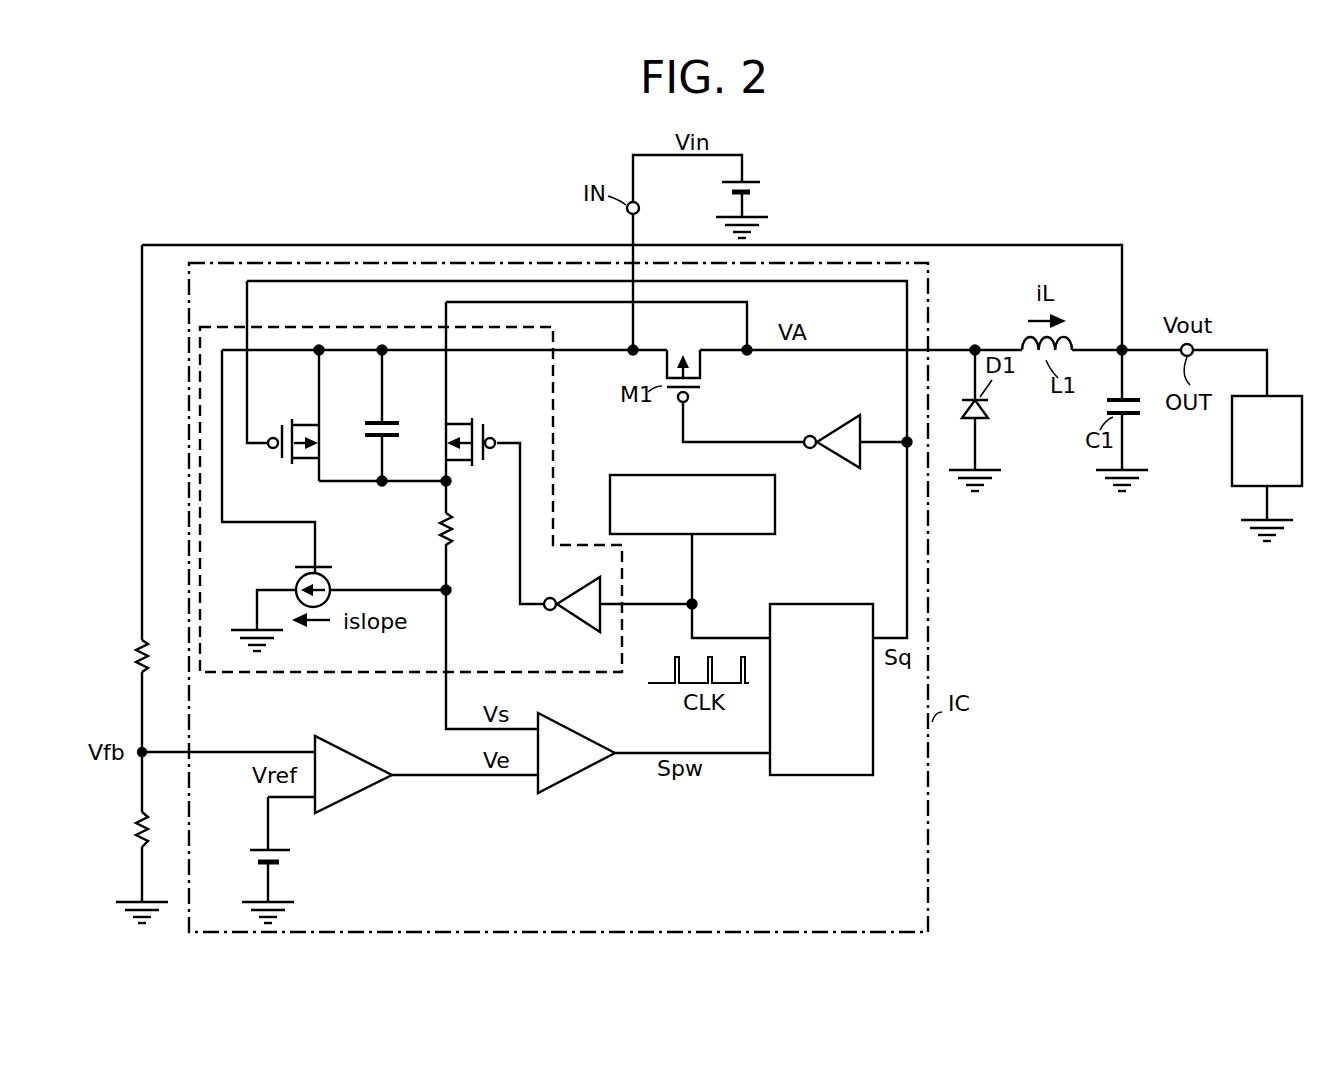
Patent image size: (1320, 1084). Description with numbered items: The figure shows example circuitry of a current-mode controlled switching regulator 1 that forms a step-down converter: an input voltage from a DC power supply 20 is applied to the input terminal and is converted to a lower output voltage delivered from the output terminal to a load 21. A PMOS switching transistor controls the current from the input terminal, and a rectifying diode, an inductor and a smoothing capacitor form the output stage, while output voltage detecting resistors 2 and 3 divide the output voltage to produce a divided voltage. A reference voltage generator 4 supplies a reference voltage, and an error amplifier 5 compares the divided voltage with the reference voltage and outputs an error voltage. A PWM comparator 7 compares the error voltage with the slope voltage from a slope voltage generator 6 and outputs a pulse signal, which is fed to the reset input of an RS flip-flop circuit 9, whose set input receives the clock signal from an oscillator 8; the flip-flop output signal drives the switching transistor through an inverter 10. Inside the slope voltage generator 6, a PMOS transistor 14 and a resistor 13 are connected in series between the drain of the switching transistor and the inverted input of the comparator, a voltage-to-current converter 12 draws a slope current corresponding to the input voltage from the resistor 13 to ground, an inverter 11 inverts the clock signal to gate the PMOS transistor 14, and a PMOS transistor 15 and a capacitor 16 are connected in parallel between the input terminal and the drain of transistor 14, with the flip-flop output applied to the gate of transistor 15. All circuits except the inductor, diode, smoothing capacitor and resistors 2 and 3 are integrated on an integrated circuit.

The switching regulator 1 is at (992, 165).
The output voltage detecting resistor 2 is at (130, 645).
The output voltage detecting resistor 3 is at (130, 820).
The reference voltage generator 4 is at (298, 856).
The error amplifier 5 is at (368, 797).
The slope voltage generator 6 is at (558, 432).
The PWM comparator 7 is at (577, 780).
The oscillator 8 is at (778, 510).
The RS flip-flop circuit 9 is at (830, 777).
The inverter 10 is at (834, 425).
The inverter 11 is at (577, 630).
The voltage-to-current converter 12 is at (297, 579).
The resistor 13 is at (438, 532).
The PMOS transistor 14 is at (472, 410).
The PMOS transistor 15 is at (294, 412).
The capacitor 16 is at (390, 420).
The DC power supply 20 is at (774, 190).
The load 21 is at (1275, 396).